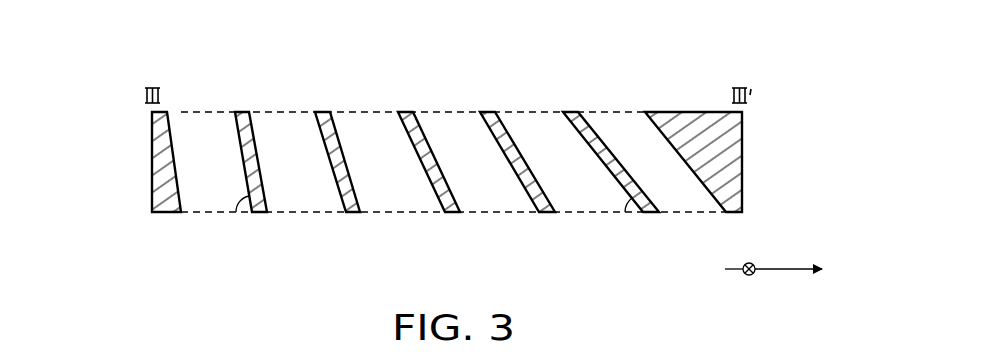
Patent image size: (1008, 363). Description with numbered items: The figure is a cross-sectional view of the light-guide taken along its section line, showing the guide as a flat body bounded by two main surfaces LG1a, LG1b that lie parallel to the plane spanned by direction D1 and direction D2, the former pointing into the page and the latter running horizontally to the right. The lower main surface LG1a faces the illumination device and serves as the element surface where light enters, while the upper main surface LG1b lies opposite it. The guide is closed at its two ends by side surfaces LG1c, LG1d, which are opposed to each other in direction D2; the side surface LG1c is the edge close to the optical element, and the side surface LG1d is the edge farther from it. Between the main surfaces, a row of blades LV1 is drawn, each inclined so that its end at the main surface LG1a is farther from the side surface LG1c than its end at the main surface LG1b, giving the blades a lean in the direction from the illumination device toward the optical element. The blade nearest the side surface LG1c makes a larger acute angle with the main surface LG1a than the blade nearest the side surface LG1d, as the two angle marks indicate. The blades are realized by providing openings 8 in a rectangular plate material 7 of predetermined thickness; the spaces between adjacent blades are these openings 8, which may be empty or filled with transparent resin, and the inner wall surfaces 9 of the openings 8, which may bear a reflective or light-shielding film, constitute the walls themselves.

The plate material 7 is at (683, 120).
The opening 8 is at (571, 200).
The inner wall surface 9 is at (600, 70).
The blade LV1 is at (244, 118).
The main surface LG1a is at (404, 218).
The main surface LG1b is at (626, 108).
The side surface LG1c is at (149, 173).
The side surface LG1d is at (746, 158).
The direction D1 is at (750, 257).
The direction D2 is at (794, 269).